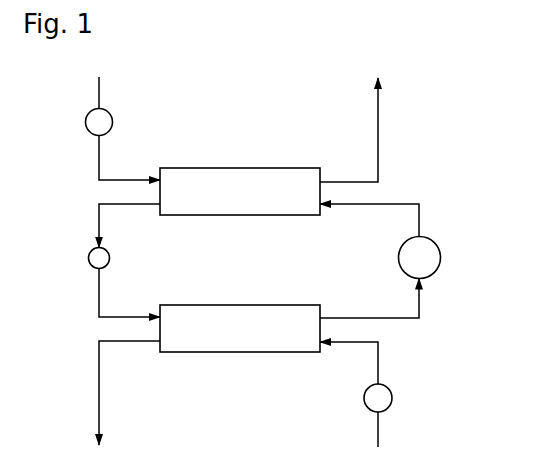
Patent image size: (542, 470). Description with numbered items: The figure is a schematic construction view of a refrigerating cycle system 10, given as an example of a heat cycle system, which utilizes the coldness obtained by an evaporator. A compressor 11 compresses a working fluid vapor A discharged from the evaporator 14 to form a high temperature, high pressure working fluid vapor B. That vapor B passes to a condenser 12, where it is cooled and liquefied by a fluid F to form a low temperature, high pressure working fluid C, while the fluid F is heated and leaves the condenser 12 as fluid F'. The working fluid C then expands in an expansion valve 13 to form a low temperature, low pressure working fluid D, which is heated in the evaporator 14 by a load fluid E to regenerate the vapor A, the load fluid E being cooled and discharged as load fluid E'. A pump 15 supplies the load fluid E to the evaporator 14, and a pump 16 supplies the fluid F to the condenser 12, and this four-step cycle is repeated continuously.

The refrigerating cycle system 10 is at (222, 118).
The compressor 11 is at (440, 257).
The condenser 12 is at (258, 168).
The expansion valve 13 is at (88, 258).
The evaporator 14 is at (257, 305).
The pump 15 is at (392, 398).
The pump 16 is at (85, 122).